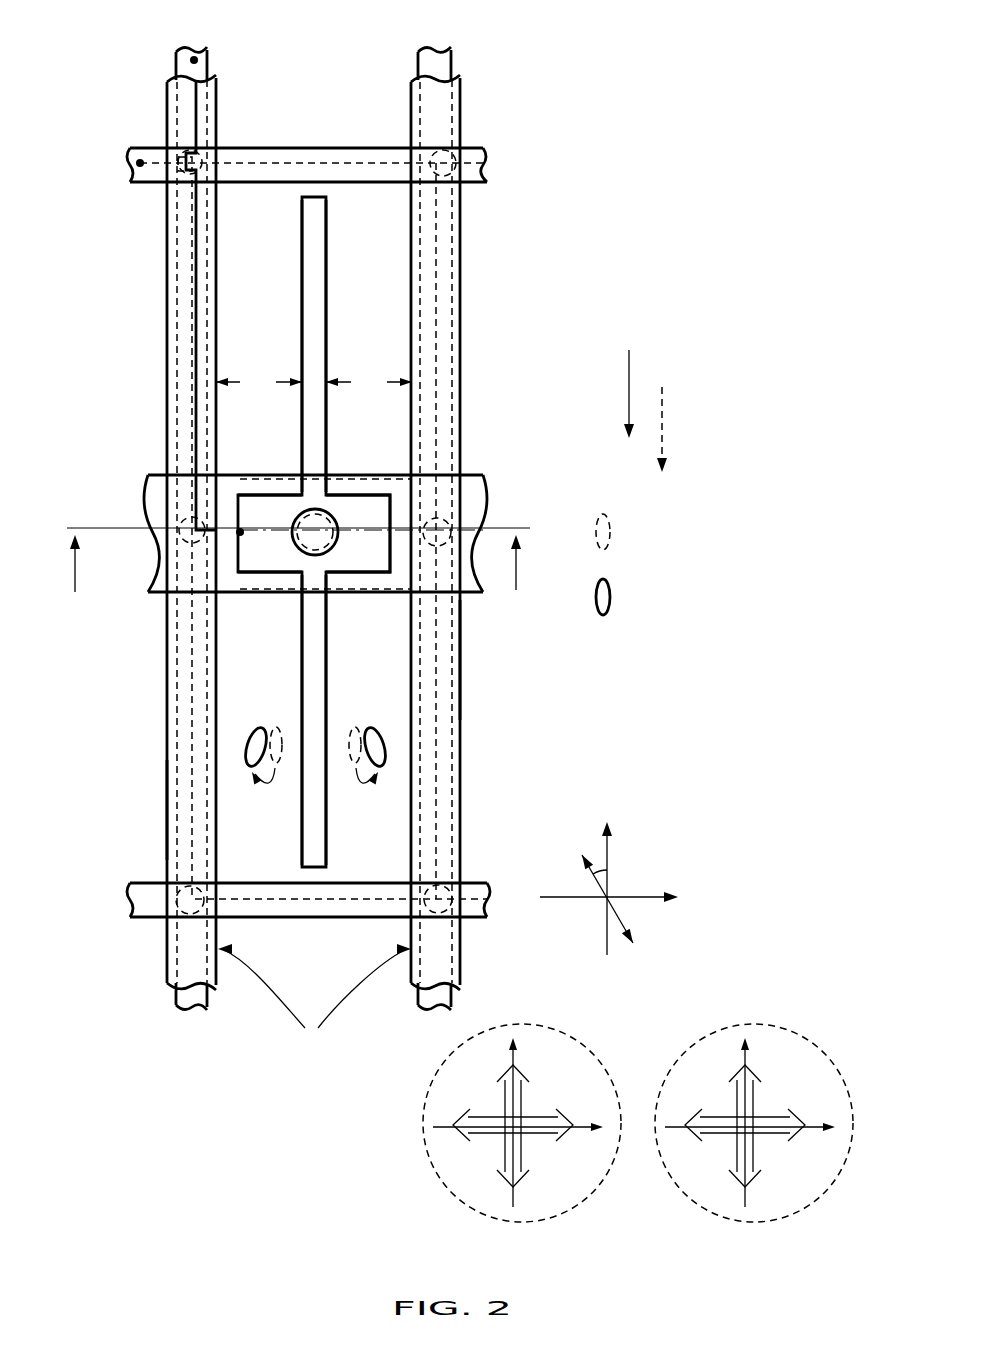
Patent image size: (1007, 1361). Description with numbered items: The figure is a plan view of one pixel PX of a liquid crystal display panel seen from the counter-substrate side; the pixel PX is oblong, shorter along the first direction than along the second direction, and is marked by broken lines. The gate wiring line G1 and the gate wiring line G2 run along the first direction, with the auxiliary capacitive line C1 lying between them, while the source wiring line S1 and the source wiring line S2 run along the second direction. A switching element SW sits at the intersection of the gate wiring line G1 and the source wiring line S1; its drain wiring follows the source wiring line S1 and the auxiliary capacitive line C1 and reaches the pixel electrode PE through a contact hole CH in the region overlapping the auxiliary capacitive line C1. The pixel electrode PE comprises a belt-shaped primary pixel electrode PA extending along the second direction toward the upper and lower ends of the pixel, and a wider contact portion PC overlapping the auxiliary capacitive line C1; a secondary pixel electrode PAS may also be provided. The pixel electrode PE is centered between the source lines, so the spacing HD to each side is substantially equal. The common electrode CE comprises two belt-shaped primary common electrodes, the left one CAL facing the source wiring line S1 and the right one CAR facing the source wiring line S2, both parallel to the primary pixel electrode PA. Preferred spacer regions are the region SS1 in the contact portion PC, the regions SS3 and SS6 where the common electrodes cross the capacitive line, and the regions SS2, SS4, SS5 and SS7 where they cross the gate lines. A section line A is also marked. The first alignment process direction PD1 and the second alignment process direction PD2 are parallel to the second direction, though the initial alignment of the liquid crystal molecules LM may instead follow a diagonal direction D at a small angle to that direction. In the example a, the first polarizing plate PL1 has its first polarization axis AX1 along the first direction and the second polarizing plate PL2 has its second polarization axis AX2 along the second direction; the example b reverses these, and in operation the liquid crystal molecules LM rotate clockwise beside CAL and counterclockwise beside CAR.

The source wiring line S1 is at (184, 52).
The source wiring line S2 is at (433, 55).
The gate wiring line G1 is at (128, 165).
The gate wiring line G2 is at (130, 897).
The auxiliary capacitive line C1 is at (146, 558).
The section line A- A is at (298, 576).
The pixel electrode PE is at (338, 232).
The primary pixel electrode PA is at (326, 338).
The contact portion PC is at (290, 495).
The secondary pixel electrode PAS is at (250, 495).
The contact hole CH is at (333, 515).
The region SS1 is at (302, 548).
The region SS2 is at (185, 152).
The region SS3 is at (188, 520).
The region SS4 is at (185, 885).
The region SS5 is at (448, 152).
The region SS6 is at (445, 520).
The region SS7 is at (445, 885).
The switching element SW is at (184, 184).
The pixel PX is at (330, 148).
The horizontal distance HD is at (314, 383).
The primary common electrode CAR is at (465, 660).
The primary common electrode CAL is at (167, 808).
The common electrode CE is at (314, 1000).
The liquid crystal molecules LM is at (543, 649).
The first alignment process direction PD1 is at (630, 362).
The second alignment process direction PD2 is at (663, 400).
The diagonal direction D is at (582, 853).
The first polarization axis AX1 is at (556, 1139).
The second polarization axis AX2 is at (525, 1081).
The first polarizing plate PL1 is at (757, 1081).
The second polarizing plate PL2 is at (788, 1139).
The example a is at (516, 1130).
The example b is at (748, 1130).